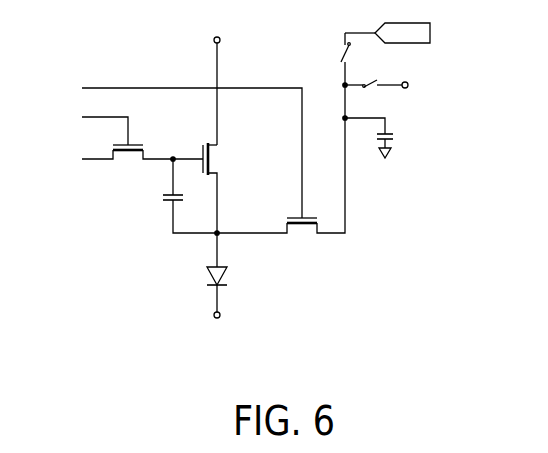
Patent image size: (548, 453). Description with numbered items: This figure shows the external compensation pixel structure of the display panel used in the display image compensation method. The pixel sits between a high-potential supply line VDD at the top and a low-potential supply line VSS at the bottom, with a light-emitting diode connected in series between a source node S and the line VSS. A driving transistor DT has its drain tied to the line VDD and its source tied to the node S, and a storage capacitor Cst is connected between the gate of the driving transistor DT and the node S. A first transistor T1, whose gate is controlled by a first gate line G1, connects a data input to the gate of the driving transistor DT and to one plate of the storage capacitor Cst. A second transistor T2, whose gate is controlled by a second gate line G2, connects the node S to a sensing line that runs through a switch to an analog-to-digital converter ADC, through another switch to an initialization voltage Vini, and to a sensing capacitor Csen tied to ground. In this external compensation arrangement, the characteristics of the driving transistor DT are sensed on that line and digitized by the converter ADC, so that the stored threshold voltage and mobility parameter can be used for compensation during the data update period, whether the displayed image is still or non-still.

The high potential power supply line VDD is at (217, 82).
The low potential power supply line VSS is at (217, 286).
The first gate line G1 is at (91, 129).
The second gate line G2 is at (178, 151).
The first transistor (switching) T1 is at (142, 160).
The second transistor (sensing) T2 is at (281, 156).
The driving transistor DT is at (219, 188).
The storage capacitor Cst is at (179, 196).
The source node of driving transistor S is at (221, 227).
The analog-to-digital converter ADC is at (387, 33).
The initialization voltage Vini is at (388, 85).
The sensing capacitor Csen is at (382, 138).